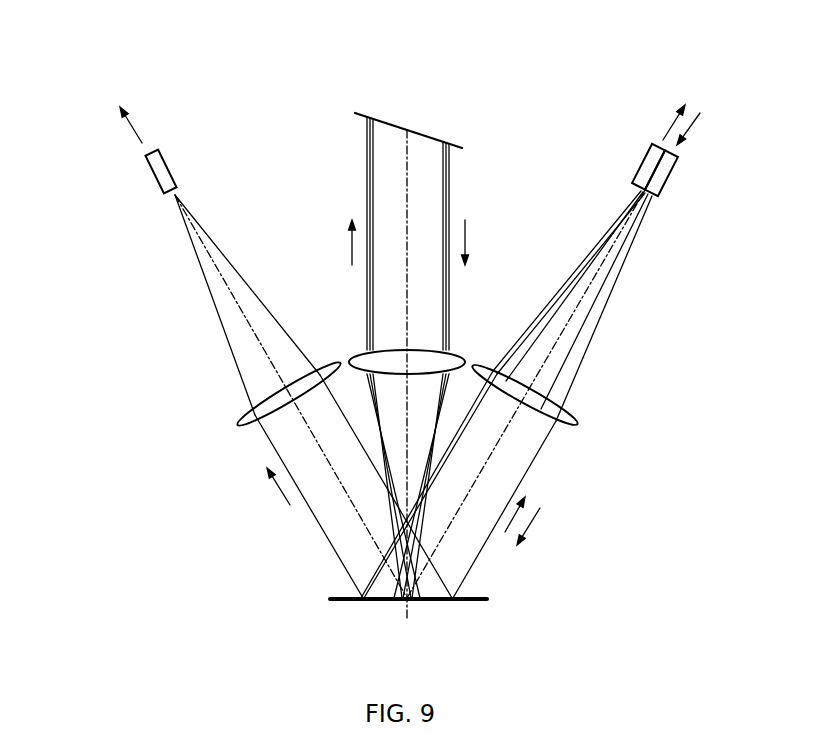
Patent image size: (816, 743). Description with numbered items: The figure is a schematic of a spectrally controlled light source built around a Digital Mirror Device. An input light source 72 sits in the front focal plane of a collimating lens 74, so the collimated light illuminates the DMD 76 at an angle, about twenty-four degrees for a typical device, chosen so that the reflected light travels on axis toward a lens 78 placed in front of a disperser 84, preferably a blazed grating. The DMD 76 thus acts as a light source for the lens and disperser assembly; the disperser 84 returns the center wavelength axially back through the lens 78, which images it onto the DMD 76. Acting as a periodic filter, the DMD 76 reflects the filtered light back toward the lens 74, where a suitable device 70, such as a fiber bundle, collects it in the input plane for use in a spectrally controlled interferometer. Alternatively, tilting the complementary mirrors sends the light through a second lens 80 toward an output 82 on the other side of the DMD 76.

The suitable device 70 is at (647, 150).
The input light source 72 is at (667, 182).
The collimating lens 74 is at (578, 418).
The DMD 76 is at (457, 600).
The lens 78 is at (352, 358).
The lens 80 is at (238, 412).
The output 82 is at (157, 182).
The disperser 84 is at (407, 127).